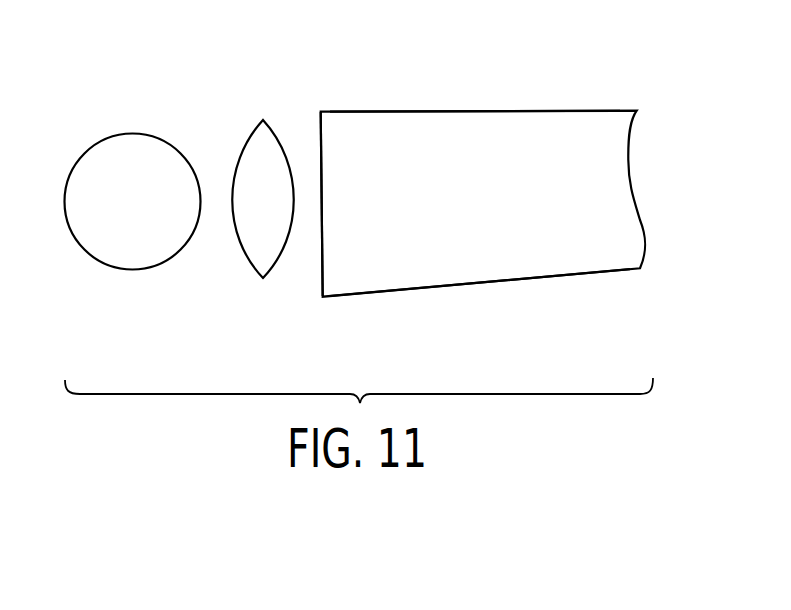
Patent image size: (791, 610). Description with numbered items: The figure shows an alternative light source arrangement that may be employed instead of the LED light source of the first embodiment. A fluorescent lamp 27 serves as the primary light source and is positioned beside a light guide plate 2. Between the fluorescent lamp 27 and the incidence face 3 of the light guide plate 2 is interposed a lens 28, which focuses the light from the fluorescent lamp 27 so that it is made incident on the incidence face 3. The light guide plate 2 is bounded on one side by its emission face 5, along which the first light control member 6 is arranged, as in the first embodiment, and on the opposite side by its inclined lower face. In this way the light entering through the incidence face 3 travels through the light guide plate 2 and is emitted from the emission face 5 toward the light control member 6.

The light guide plate 2 is at (550, 110).
The incidence face 3 is at (321, 273).
The emission face 5 is at (453, 109).
The first light control member 6 is at (513, 283).
The fluorescent lamp 27 is at (81, 154).
The lens 28 is at (248, 268).